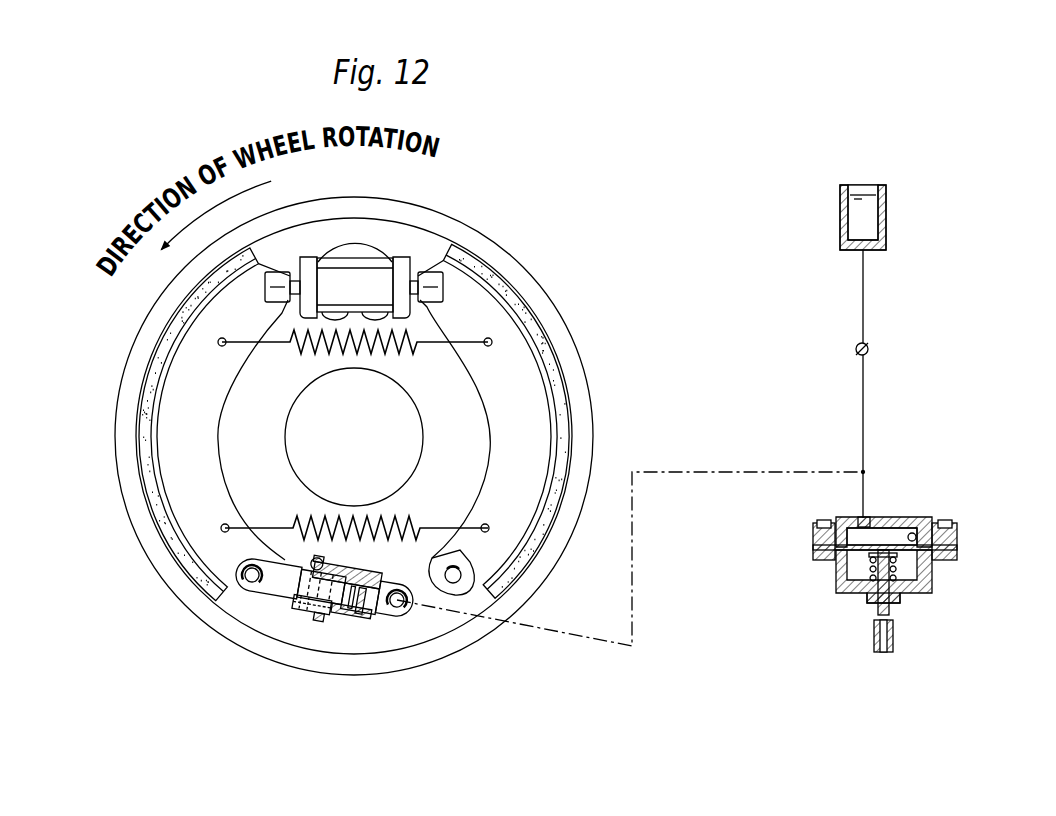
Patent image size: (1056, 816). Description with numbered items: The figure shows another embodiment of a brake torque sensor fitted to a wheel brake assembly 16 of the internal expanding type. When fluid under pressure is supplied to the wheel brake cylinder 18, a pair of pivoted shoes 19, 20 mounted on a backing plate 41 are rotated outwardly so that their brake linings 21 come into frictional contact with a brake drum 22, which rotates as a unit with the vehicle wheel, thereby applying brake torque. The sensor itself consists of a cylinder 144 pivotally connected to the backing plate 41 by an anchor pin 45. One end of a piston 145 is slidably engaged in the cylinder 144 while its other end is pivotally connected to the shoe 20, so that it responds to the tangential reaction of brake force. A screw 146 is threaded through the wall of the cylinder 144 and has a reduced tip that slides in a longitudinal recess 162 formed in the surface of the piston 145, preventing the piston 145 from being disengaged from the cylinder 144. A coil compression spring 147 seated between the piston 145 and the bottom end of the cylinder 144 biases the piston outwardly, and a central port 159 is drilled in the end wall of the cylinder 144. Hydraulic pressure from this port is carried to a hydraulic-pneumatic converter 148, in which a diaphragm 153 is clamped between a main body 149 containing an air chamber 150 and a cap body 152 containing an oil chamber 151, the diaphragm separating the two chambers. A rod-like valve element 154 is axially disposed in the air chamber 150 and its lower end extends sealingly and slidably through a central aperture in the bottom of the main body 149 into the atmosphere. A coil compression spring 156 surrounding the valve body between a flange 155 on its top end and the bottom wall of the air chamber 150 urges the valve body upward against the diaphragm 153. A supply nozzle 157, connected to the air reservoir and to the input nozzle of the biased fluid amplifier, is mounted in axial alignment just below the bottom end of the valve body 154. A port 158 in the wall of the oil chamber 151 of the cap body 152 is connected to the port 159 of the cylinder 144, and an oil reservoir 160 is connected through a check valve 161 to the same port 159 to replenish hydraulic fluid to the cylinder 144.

The wheel brake assembly 16 is at (197, 628).
The wheel brake cylinder 18 is at (372, 280).
The shoe 19 is at (528, 378).
The shoe 20 is at (183, 403).
The brake lining 21 is at (148, 459).
The brake drum 22 is at (139, 331).
The backing plate 41 is at (412, 603).
The anchor pin 45 is at (405, 603).
The cylinder 144 is at (355, 618).
The piston 145 is at (300, 600).
The screw 146 is at (327, 615).
The coil compression spring 147 is at (362, 620).
The hydraulic-pneumatic converter 148 is at (812, 540).
The main body 149 is at (932, 566).
The air chamber 150 is at (930, 586).
The oil chamber 151 is at (935, 547).
The cap body 152 is at (905, 536).
The diaphragm 153 is at (925, 525).
The rod-like valve element 154 is at (893, 612).
The flange 155 is at (870, 555).
The coil compression spring 156 is at (870, 560).
The supply nozzle 157 is at (893, 650).
The port 158 is at (866, 517).
The central port 159 is at (380, 612).
The oil reservoir 160 is at (888, 218).
The check valve 161 is at (868, 349).
The longitudinal recess 162 is at (310, 610).